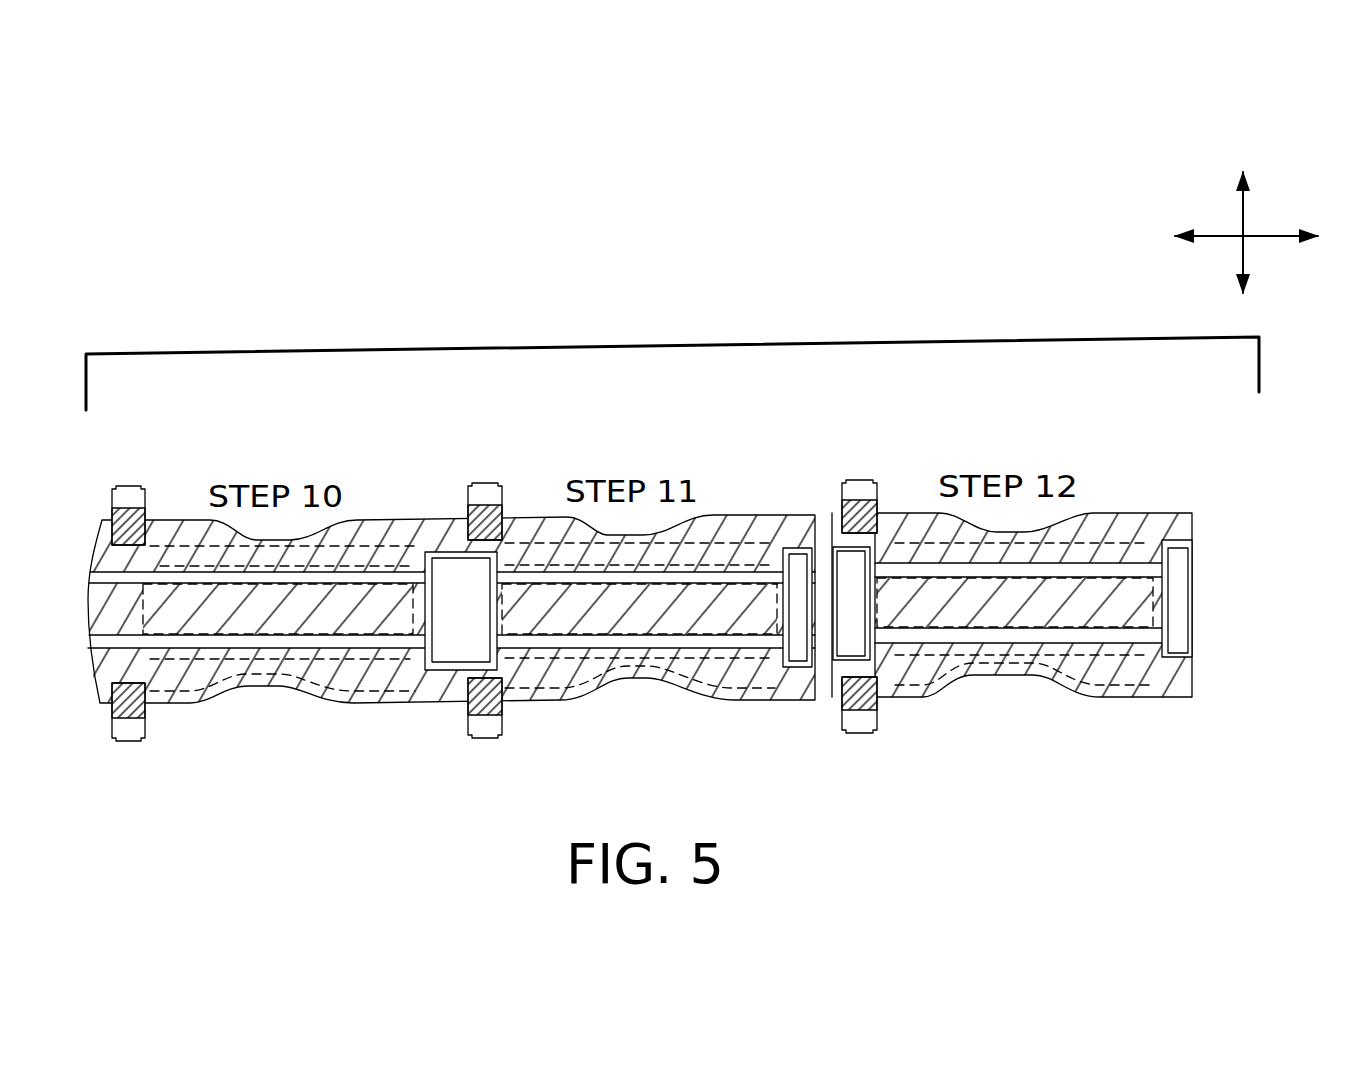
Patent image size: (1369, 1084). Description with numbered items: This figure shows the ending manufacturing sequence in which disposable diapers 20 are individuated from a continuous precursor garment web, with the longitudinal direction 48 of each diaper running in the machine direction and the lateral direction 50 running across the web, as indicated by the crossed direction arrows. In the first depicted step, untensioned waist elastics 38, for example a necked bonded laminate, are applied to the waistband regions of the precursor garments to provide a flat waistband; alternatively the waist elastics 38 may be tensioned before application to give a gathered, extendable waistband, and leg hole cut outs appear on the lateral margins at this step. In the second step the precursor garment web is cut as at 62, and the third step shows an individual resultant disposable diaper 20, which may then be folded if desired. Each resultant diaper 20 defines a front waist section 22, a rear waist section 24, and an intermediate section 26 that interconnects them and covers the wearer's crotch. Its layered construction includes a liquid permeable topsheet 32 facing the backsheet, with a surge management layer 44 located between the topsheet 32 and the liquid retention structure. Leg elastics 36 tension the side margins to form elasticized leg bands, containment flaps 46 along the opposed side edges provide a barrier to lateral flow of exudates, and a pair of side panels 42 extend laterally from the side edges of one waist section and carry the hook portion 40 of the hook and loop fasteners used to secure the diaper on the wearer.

The disposable diaper 20 is at (996, 762).
The front waist section 22 is at (1058, 654).
The rear waist section 24 is at (869, 750).
The intermediate section 26 is at (1018, 681).
The topsheet 32 is at (1113, 683).
The leg elastics 36 is at (1082, 693).
The waist elastics 38 is at (447, 642).
The hook portion 40 is at (909, 455).
The side panels 42 is at (878, 503).
The surge management layer 44 is at (952, 622).
The containment flaps 46 is at (1083, 565).
The longitudinal direction 48 is at (1265, 240).
The lateral direction 50 is at (1245, 210).
The cut 62 is at (823, 476).